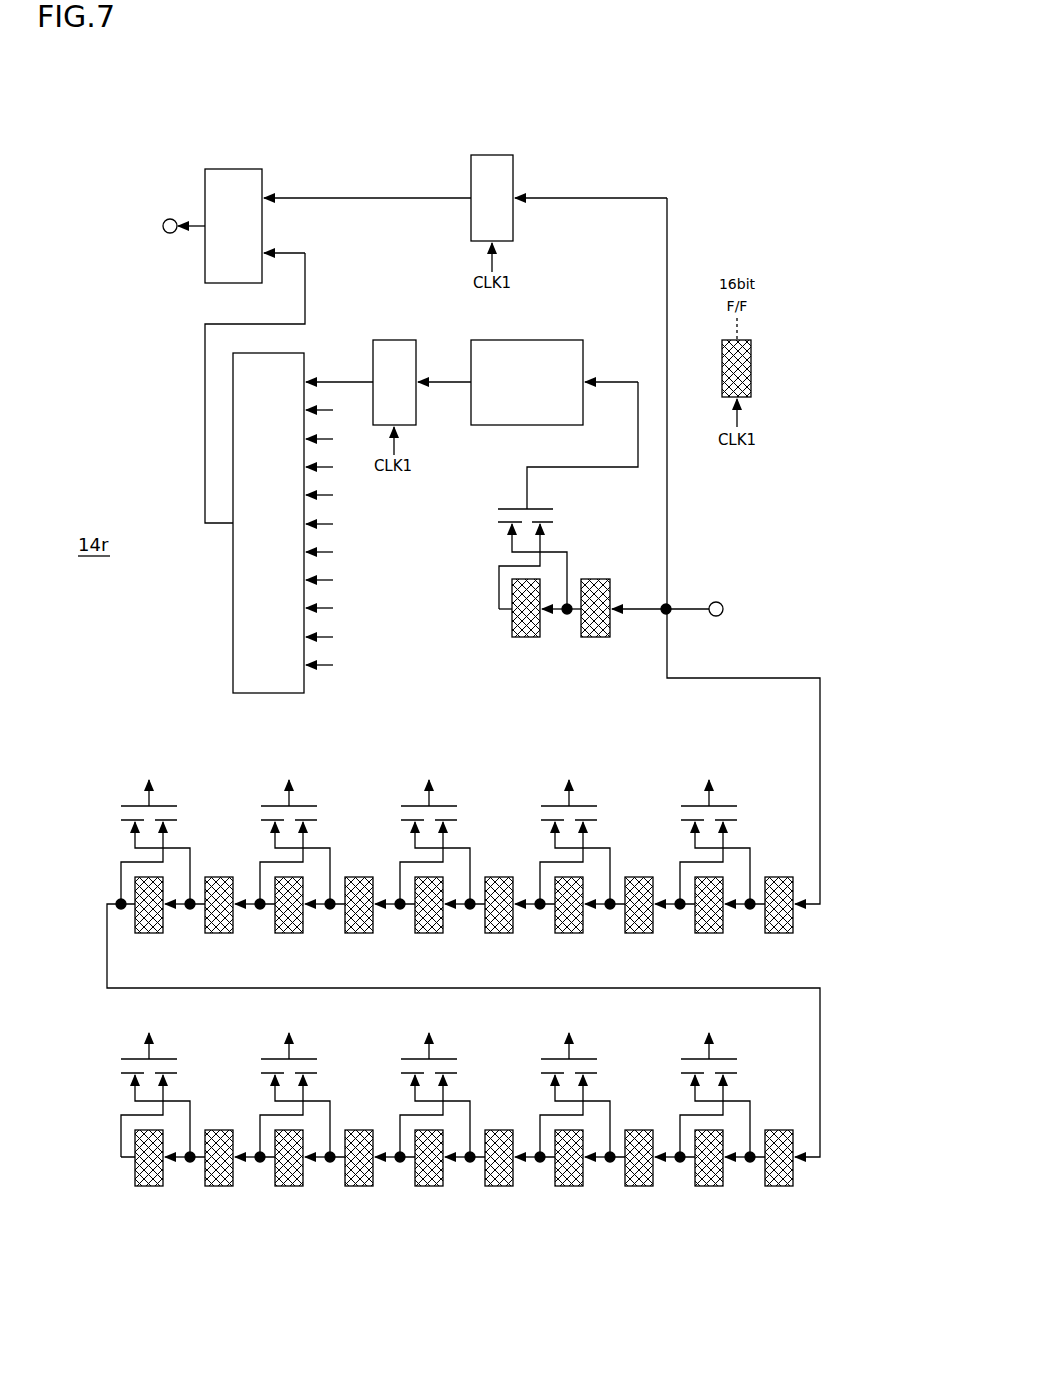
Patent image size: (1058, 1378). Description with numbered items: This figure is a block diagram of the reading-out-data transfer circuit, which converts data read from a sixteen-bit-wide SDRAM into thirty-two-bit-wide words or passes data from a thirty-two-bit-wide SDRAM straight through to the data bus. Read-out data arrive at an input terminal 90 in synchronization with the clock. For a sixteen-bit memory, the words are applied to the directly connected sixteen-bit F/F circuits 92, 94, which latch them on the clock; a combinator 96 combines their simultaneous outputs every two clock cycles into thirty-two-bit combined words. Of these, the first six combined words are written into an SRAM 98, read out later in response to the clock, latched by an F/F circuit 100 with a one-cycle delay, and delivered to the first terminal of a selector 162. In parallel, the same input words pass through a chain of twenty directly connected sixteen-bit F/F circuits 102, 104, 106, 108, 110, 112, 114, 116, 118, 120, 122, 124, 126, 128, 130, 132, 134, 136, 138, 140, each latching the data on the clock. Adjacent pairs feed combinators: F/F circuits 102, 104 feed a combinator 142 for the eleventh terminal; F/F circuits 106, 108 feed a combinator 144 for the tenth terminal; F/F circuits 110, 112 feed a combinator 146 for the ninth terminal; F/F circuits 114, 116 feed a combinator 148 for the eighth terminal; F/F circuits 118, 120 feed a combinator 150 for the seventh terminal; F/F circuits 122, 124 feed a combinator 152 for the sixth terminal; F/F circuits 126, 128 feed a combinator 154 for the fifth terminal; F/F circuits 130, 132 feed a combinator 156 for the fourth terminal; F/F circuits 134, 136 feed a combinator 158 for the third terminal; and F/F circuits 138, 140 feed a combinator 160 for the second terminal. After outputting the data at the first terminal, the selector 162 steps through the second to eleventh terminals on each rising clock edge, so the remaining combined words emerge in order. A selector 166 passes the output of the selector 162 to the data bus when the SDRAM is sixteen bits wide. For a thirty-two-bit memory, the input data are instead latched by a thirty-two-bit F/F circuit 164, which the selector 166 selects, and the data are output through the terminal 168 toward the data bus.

The input terminal 90 is at (718, 601).
The F/F circuit 92 is at (595, 637).
The F/F circuit 94 is at (525, 637).
The combinator 96 is at (503, 502).
The SRAM 98 is at (556, 339).
The F/F circuit 100 is at (390, 339).
The F/F circuit 102 is at (780, 933).
The F/F circuit 104 is at (710, 933).
The F/F circuit 106 is at (640, 933).
The F/F circuit 108 is at (570, 933).
The F/F circuit 110 is at (500, 933).
The F/F circuit 112 is at (430, 933).
The F/F circuit 114 is at (360, 933).
The F/F circuit 116 is at (290, 933).
The F/F circuit 118 is at (220, 933).
The F/F circuit 120 is at (150, 933).
The F/F circuit 122 is at (780, 1186).
The F/F circuit 124 is at (710, 1186).
The F/F circuit 126 is at (640, 1186).
The F/F circuit 128 is at (570, 1186).
The F/F circuit 130 is at (500, 1186).
The F/F circuit 132 is at (430, 1186).
The F/F circuit 134 is at (360, 1186).
The F/F circuit 136 is at (290, 1186).
The F/F circuit 138 is at (220, 1186).
The F/F circuit 140 is at (150, 1186).
The combinator 142 is at (738, 806).
The combinator 144 is at (598, 806).
The combinator 146 is at (458, 806).
The combinator 148 is at (318, 806).
The combinator 150 is at (178, 806).
The combinator 152 is at (738, 1059).
The combinator 154 is at (598, 1059).
The combinator 156 is at (458, 1059).
The combinator 158 is at (318, 1059).
The combinator 160 is at (178, 1059).
The selector 162 is at (233, 607).
The F/F circuit 164 is at (471, 180).
The selector 166 is at (250, 170).
The output terminal to data bus 168 is at (170, 218).